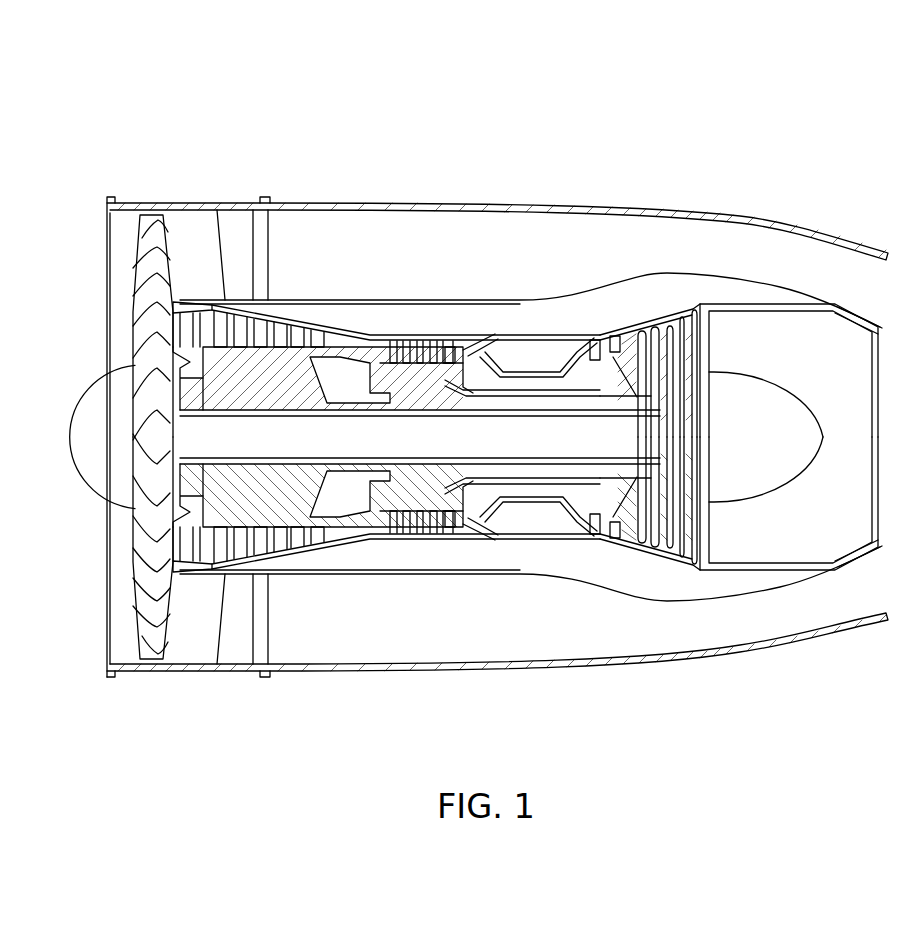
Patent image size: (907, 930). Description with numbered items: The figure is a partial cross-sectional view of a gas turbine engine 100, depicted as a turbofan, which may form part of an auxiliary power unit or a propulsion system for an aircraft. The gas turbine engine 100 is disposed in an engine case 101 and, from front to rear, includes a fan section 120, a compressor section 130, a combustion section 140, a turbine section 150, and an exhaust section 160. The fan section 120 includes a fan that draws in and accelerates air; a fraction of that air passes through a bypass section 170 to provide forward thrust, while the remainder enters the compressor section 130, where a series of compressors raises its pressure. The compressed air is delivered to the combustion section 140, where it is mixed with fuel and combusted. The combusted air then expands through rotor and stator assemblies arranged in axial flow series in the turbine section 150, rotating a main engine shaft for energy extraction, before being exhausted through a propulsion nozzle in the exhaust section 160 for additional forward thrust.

The gas turbine engine 100 is at (320, 109).
The engine case 101 is at (330, 203).
The bypass section 170 is at (425, 229).
The fan section 120 is at (183, 703).
The compressor section 130 is at (418, 703).
The combustion section 140 is at (567, 703).
The turbine section 150 is at (717, 703).
The exhaust section 160 is at (832, 703).